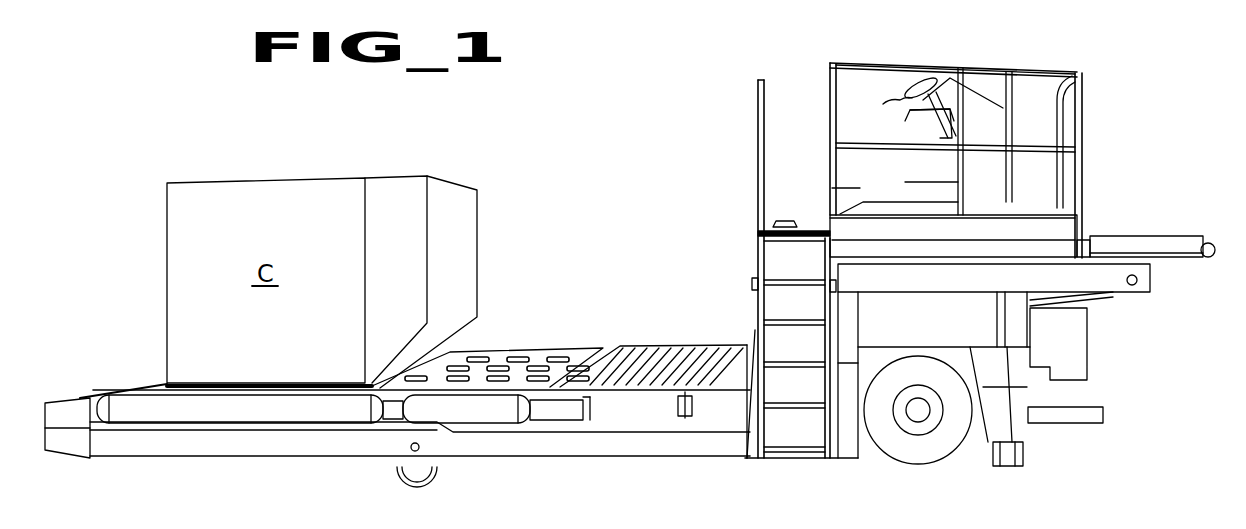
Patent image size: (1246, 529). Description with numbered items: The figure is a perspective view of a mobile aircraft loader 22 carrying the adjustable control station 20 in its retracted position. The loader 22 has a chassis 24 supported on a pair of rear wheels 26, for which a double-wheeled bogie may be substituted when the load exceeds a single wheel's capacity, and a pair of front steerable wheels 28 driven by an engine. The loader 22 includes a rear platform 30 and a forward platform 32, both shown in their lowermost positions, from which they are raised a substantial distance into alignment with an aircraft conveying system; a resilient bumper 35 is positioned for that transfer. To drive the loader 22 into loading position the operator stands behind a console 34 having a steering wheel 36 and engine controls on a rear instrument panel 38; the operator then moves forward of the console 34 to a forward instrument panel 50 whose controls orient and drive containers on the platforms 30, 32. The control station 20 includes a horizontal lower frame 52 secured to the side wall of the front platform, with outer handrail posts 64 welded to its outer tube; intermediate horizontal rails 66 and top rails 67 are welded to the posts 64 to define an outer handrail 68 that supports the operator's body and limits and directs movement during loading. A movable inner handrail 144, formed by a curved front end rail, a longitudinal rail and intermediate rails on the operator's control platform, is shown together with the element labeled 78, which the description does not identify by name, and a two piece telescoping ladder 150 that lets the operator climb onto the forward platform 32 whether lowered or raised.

The adjustable control station 20 is at (1092, 78).
The mobile aircraft loader 22 is at (1100, 351).
The chassis 24 is at (543, 453).
The rear wheels 26 is at (400, 467).
The front steerable wheels 28 is at (893, 462).
The rear platform 30 is at (510, 345).
The forward platform 32 is at (1135, 226).
The console 34 is at (1002, 138).
The resilient bumper 35 is at (1212, 258).
The steering wheel 36 is at (897, 101).
The rear instrument panel 38 is at (935, 80).
The forward instrument panel 50 is at (985, 92).
The horizontal lower frame 52 is at (818, 251).
The outer handrail posts 64 is at (895, 183).
The intermediate horizontal rails 66 is at (845, 150).
The top rails 67 is at (880, 62).
The outer handrail 68 is at (824, 62).
The operator platform 78 is at (1092, 200).
The movable inner handrail 144 is at (1090, 116).
The two piece telescoping ladder 150 is at (755, 300).